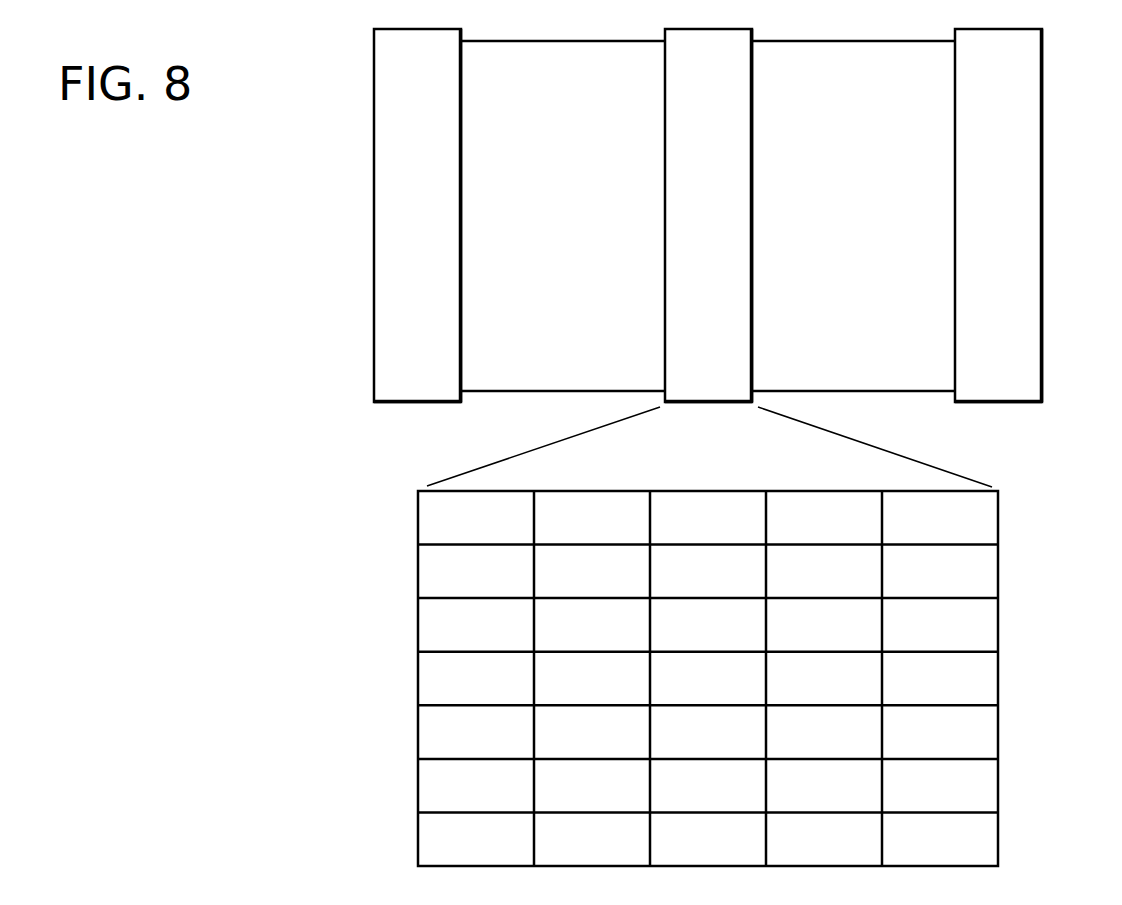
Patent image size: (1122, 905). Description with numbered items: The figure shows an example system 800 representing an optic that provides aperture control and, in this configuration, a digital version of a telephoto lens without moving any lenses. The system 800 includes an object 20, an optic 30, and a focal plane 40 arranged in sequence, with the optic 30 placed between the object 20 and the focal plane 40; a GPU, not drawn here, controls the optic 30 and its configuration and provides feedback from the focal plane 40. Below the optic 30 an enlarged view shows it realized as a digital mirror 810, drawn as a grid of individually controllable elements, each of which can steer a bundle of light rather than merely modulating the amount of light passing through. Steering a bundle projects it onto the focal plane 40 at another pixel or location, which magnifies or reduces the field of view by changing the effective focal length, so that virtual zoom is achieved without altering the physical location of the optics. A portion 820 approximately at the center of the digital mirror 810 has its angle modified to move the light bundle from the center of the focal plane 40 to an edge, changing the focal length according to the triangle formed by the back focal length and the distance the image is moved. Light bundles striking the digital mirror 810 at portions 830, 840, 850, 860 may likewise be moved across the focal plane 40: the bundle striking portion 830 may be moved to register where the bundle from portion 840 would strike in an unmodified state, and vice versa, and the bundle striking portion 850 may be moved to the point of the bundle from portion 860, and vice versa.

The system 800 is at (142, 170).
The object 20 is at (404, 381).
The optic 30 is at (694, 381).
The focal plane 40 is at (984, 380).
The digital mirror 810 is at (998, 491).
The portion 820 is at (702, 677).
The portion 830 is at (708, 518).
The portion 840 is at (708, 839).
The portion 850 is at (940, 679).
The portion 860 is at (476, 679).